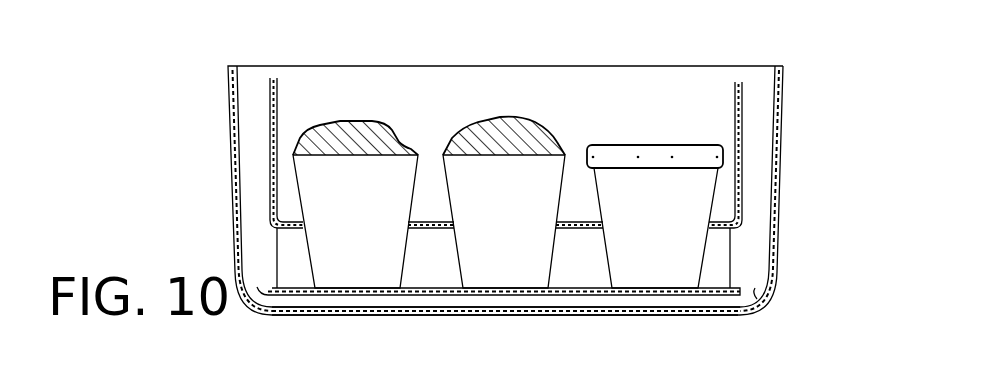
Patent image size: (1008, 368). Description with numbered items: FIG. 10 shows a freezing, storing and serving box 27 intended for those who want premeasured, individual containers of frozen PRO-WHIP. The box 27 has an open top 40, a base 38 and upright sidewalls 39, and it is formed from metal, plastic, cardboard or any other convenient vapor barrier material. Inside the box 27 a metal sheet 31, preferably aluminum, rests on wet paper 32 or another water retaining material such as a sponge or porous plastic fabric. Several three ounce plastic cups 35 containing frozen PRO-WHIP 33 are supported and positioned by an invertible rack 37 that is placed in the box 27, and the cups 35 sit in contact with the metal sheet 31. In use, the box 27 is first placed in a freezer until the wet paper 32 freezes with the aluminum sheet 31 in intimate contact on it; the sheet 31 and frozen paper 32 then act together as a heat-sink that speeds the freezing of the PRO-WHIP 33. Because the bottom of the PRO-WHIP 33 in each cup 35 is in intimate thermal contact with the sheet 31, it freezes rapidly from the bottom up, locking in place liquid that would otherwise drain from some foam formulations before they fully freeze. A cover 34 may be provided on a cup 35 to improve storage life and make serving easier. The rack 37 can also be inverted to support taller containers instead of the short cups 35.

The serving box 27 is at (802, 55).
The metal sheet 31 is at (697, 288).
The wet paper 32 is at (752, 300).
The PRO-WHIP 33 is at (305, 137).
The cover 34 is at (662, 153).
The cups 35 is at (323, 197).
The invertible rack 37 is at (270, 115).
The base 38 is at (737, 314).
The upright sidewalls 39 is at (782, 100).
The open top 40 is at (290, 61).